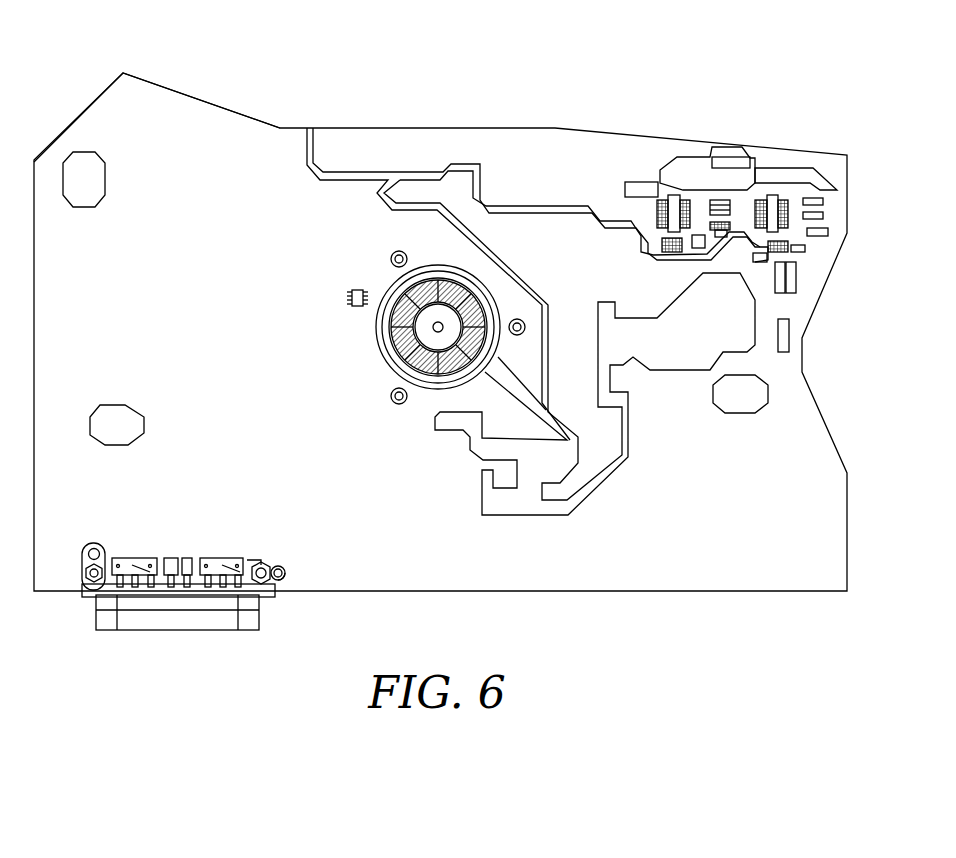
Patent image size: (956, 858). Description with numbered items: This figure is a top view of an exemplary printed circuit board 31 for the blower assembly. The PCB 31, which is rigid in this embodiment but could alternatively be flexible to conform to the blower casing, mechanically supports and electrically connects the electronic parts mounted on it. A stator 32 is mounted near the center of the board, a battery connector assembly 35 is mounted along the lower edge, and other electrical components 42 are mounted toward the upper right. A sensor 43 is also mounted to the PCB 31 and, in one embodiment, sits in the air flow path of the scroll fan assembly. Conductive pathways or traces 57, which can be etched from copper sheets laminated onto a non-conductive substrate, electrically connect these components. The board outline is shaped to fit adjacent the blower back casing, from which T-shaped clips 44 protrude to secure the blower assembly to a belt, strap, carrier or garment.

The printed circuit board 31 is at (813, 152).
The stator 32 is at (380, 338).
The battery connector assembly 35 is at (178, 628).
The electrical components 42 is at (675, 197).
The sensor 43 is at (355, 289).
The T-shaped clips 44 is at (175, 117).
The traces 57 is at (547, 210).